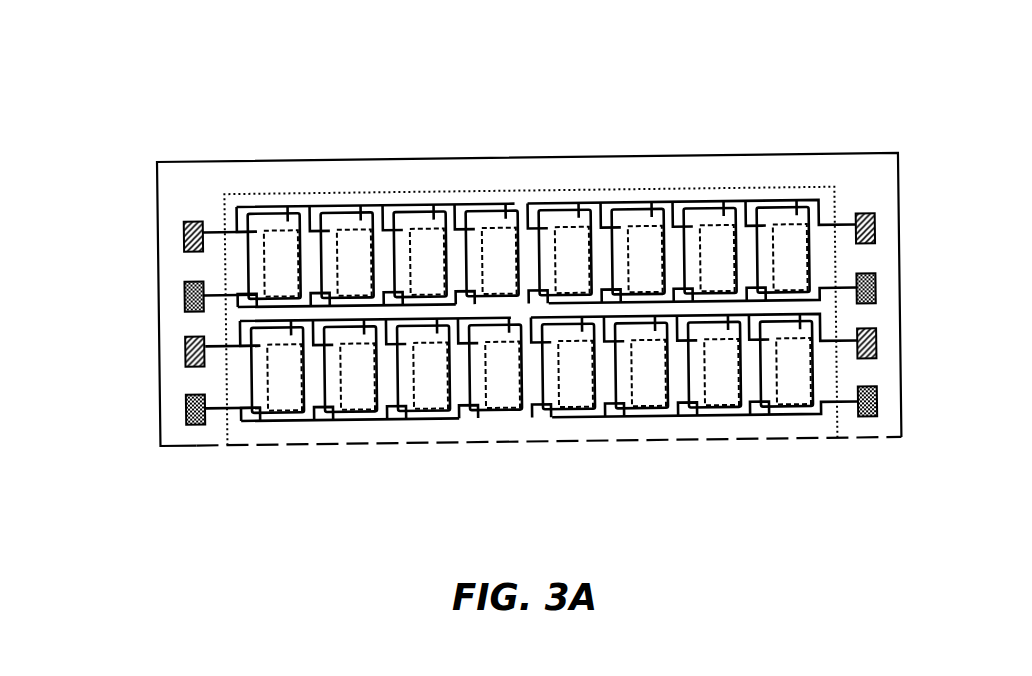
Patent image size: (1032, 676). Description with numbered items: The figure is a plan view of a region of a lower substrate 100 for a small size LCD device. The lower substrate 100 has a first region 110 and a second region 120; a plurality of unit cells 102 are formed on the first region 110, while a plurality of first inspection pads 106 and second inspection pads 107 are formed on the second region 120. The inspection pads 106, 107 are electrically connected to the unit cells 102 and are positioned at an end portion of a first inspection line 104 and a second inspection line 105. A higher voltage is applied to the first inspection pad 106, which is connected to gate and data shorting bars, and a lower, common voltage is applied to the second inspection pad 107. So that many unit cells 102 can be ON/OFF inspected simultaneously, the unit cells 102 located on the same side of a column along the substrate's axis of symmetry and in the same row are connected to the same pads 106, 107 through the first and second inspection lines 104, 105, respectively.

The lower substrate 100 is at (762, 113).
The unit cell 102 is at (498, 246).
The first inspection line 104 is at (420, 320).
The second inspection line 105 is at (350, 310).
The first inspection pad 106 is at (182, 233).
The second inspection pad 107 is at (182, 298).
The first region 110 is at (283, 437).
The second region 120 is at (200, 435).